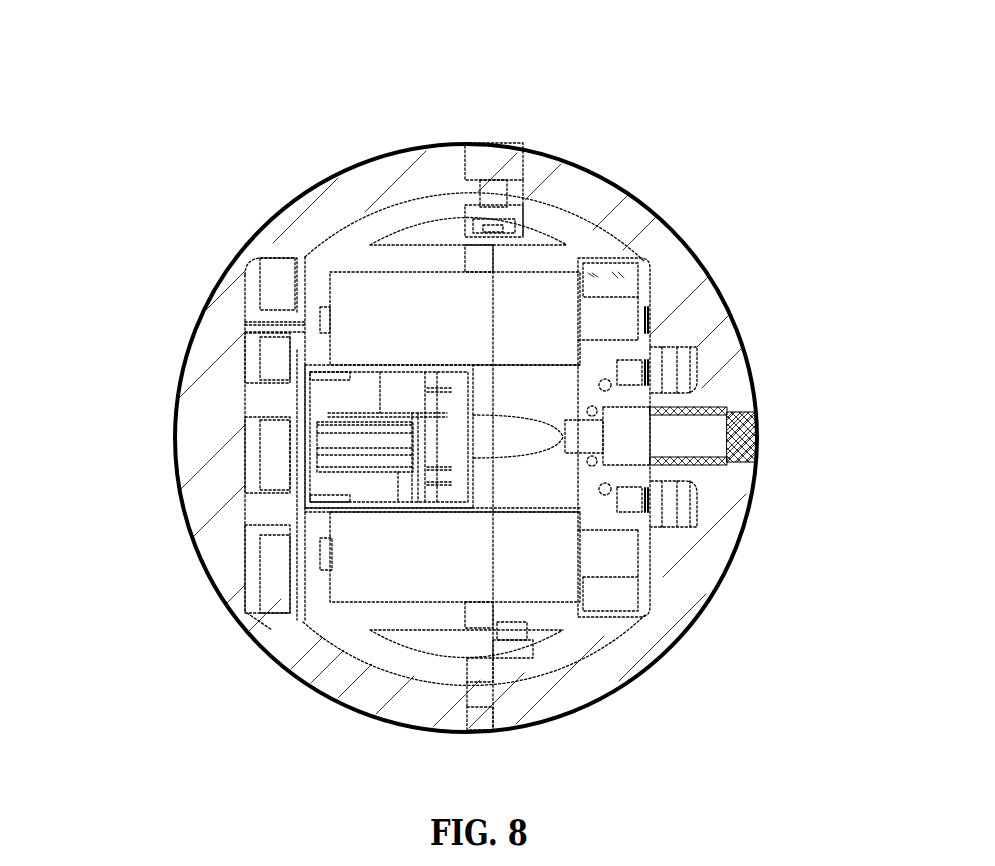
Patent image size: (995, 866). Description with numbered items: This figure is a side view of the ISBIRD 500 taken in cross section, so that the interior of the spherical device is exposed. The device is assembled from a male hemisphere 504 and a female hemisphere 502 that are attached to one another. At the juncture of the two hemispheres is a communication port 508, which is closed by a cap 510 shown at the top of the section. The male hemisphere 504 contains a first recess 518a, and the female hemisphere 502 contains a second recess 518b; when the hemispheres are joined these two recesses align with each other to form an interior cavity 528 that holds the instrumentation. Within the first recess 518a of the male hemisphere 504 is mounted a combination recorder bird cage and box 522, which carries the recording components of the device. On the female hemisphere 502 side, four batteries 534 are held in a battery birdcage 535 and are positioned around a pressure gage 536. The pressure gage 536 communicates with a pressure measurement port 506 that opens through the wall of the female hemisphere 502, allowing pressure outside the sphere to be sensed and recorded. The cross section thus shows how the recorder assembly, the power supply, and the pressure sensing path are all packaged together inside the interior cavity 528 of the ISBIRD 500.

The ISBIRD 500 is at (683, 238).
The female hemisphere 502 is at (740, 333).
The male hemisphere 504 is at (193, 338).
The pressure measurement port 506 is at (760, 433).
The communication port 508 is at (365, 210).
The cap 510 is at (495, 141).
The first recess 518a is at (330, 642).
The second recess 518b is at (577, 218).
The combination recorder bird cage and box 522 is at (247, 403).
The interior cavity 528 is at (540, 480).
The batteries 534 is at (365, 312).
The battery birdcage 535 is at (627, 286).
The pressure gage 536 is at (700, 438).